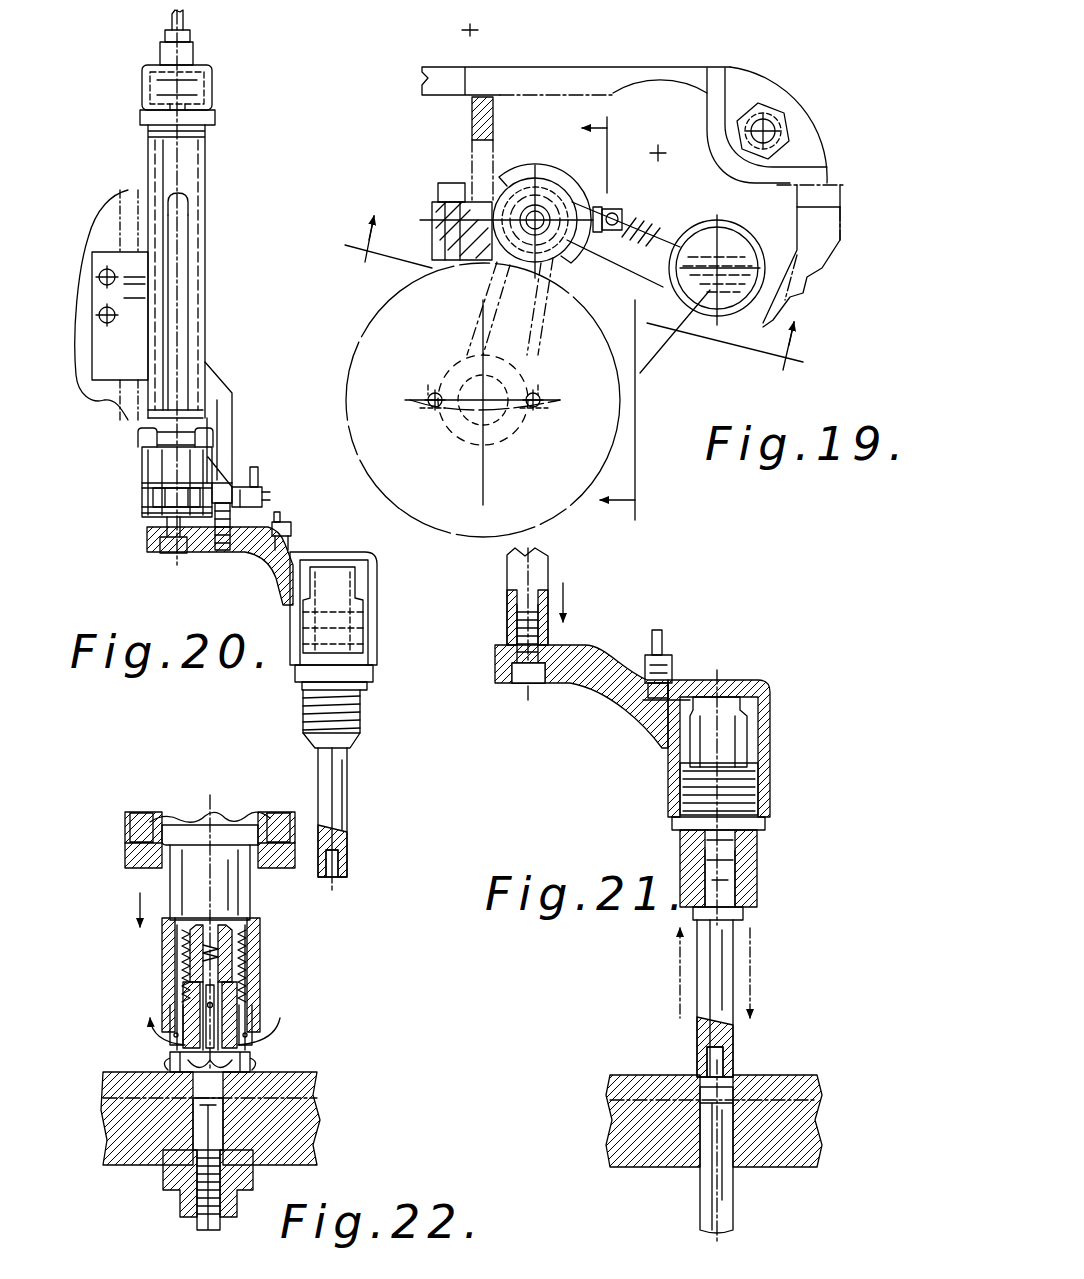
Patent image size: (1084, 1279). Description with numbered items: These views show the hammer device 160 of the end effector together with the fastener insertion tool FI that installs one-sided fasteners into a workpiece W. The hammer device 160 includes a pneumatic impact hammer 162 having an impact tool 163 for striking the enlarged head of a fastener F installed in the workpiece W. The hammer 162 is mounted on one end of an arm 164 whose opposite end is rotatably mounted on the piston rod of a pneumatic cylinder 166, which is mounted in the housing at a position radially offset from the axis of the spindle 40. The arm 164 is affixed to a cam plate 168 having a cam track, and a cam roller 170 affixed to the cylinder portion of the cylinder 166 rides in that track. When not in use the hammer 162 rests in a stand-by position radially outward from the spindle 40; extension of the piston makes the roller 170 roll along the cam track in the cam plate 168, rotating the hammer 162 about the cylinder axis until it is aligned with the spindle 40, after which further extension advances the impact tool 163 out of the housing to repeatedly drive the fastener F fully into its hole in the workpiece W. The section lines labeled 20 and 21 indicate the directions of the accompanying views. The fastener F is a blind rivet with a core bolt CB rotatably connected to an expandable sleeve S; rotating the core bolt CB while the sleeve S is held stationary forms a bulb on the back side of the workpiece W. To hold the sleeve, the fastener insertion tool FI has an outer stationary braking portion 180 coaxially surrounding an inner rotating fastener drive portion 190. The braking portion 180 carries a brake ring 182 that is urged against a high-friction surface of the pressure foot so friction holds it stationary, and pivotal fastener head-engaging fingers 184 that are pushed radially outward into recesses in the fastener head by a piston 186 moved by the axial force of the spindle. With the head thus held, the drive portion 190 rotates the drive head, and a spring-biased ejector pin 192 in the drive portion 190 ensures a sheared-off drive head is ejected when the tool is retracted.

In FIG. 19, the spindle 40 is at (345, 420).
In FIG. 20, the hammer device 160 is at (382, 588).
In FIG. 19, the hammer device 160 is at (720, 313).
In FIG. 20, the pneumatic impact hammer 162 is at (367, 637).
In FIG. 21, the pneumatic impact hammer 162 is at (682, 797).
In FIG. 20, the impact tool 163 is at (348, 840).
In FIG. 21, the impact tool 163 is at (735, 1037).
In FIG. 20, the arm 164 is at (252, 562).
In FIG. 21, the arm 164 is at (585, 655).
In FIG. 20, the pneumatic cylinder 166 is at (205, 175).
In FIG. 19, the pneumatic cylinder 166 is at (505, 185).
In FIG. 20, the cam plate 168 is at (207, 390).
In FIG. 19, the cam plate 168 is at (607, 184).
In FIG. 21, the cam plate 168 is at (540, 570).
In FIG. 20, the cam roller 170 is at (263, 483).
In FIG. 22, the outer stationary braking portion 180 is at (123, 835).
In FIG. 22, the brake ring 182 is at (140, 868).
In FIG. 22, the fastener head-engaging fingers 184 is at (252, 1066).
In FIG. 22, the piston 186 is at (258, 1010).
In FIG. 22, the inner rotating fastener drive portion 190 is at (230, 965).
In FIG. 22, the spring-biased ejector pin 192 is at (210, 1022).
In FIG. 21, the workpiece W is at (622, 1095).
In FIG. 22, the workpiece W is at (290, 1083).
In FIG. 21, the fastener F is at (698, 1184).
In FIG. 22, the fastener insertion tool FI is at (185, 800).
In FIG. 22, the expandable sleeve S is at (180, 1190).
In FIG. 22, the core bolt CB is at (240, 1195).
In FIG. 19, the section line 20 is at (378, 296).
In FIG. 19, the section line 21 is at (708, 515).